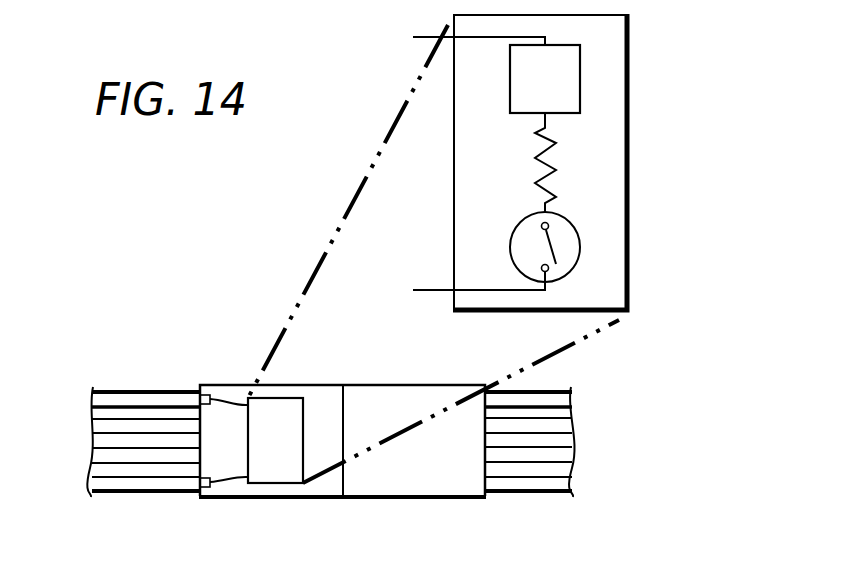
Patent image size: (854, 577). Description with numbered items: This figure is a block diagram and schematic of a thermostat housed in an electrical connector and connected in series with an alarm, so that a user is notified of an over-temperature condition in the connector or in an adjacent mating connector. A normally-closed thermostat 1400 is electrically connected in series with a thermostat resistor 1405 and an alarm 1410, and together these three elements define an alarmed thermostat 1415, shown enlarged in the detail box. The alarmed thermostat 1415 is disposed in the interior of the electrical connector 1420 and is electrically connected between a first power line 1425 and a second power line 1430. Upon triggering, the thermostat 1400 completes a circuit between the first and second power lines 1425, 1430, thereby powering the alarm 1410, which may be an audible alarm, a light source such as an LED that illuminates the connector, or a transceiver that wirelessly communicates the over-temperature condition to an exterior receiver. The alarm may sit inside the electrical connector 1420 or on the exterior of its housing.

The normally-closed thermostat 1400 is at (580, 257).
The thermostat resistor 1405 is at (553, 148).
The alarm 1410 is at (580, 88).
The alarmed thermostat 1415 is at (640, 284).
The electrical connector 1420 is at (218, 385).
The first power line 1425 is at (130, 392).
The second power line 1430 is at (130, 492).